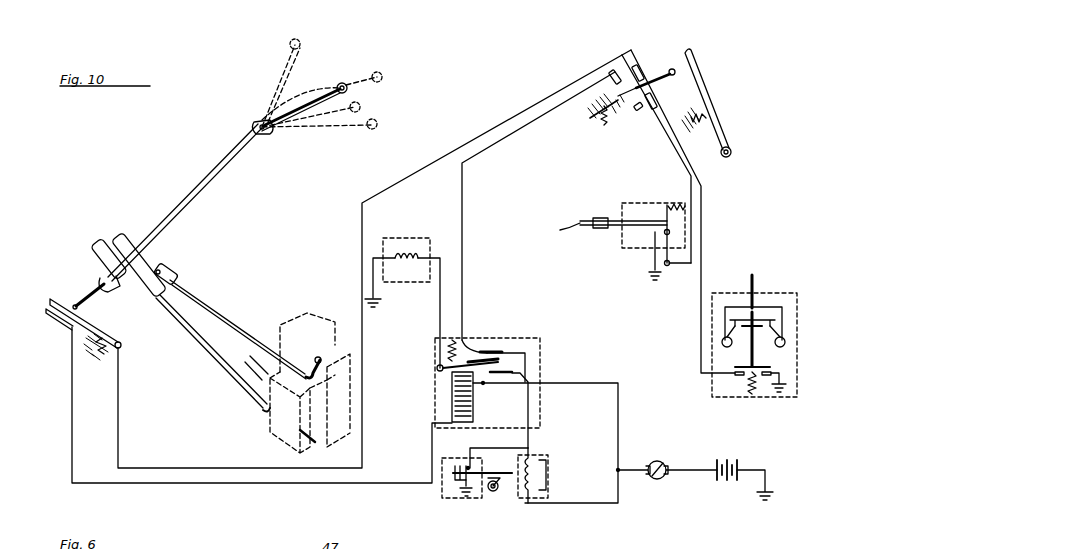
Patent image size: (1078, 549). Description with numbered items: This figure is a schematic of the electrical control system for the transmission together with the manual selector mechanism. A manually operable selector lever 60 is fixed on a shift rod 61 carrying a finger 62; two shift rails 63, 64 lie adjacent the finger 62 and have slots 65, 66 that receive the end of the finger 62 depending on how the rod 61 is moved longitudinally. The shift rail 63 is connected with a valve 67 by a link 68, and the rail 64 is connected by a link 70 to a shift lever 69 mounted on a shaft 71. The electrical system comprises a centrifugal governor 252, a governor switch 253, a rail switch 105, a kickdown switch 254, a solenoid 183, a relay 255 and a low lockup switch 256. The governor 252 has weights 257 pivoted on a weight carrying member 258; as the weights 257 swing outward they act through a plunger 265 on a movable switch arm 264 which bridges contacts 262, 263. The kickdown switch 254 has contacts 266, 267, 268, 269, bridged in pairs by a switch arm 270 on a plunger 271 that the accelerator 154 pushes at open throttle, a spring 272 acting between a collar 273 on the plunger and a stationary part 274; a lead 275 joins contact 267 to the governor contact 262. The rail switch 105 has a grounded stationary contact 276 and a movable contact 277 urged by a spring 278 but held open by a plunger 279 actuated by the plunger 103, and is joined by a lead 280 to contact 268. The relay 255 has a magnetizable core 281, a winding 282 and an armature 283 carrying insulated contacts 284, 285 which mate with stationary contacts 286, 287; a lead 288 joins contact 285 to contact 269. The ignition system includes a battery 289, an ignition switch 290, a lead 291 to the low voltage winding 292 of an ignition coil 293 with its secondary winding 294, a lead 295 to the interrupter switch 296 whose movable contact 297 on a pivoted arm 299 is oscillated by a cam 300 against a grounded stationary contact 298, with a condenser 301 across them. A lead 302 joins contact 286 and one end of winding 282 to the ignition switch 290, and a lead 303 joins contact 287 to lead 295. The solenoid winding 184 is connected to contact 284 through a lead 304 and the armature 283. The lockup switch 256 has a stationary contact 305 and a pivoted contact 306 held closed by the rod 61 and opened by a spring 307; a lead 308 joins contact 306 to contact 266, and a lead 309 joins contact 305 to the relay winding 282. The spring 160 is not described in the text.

The selector lever 60 is at (285, 126).
The shift rod 61 is at (210, 172).
The finger 62 is at (118, 288).
The shift rail 63 is at (101, 246).
The shift rail 64 is at (125, 236).
The slot 65 is at (134, 292).
The slot 66 is at (172, 270).
The valve 67 is at (270, 415).
The link 68 is at (213, 353).
The shift lever 69 is at (317, 356).
The link 70 is at (236, 328).
The shaft 71 is at (333, 345).
The plunger 103 is at (568, 236).
The rail switch 105 is at (614, 216).
The accelerator 154 is at (698, 70).
The spring 160 is at (711, 123).
The solenoid 183 is at (376, 243).
The solenoid winding 184 is at (405, 266).
The centrifugal governor 252 is at (763, 285).
The governor switch 253 is at (727, 382).
The kickdown switch 254 is at (641, 46).
The relay 255 is at (524, 333).
The low lockup switch 256 is at (70, 335).
The weights 257 is at (722, 341).
The weight carrying member 258 is at (745, 305).
The contact 262 is at (740, 378).
The contact 263 is at (770, 378).
The movable switch arm 264 is at (734, 368).
The plunger 265 is at (750, 357).
The contact 266 is at (634, 66).
The contact 267 is at (656, 101).
The contact 268 is at (638, 112).
The contact 269 is at (617, 92).
The switch arm 270 is at (620, 60).
The plunger 271 is at (670, 68).
The spring 272 is at (612, 128).
The collar 273 is at (616, 128).
The stationary part 274 is at (604, 122).
The lead 275 is at (703, 202).
The stationary contact 276 is at (652, 264).
The movable contact 277 is at (674, 266).
The spring 278 is at (686, 210).
The plunger 279 is at (606, 230).
The lead 280 is at (660, 140).
The magnetizable core 281 is at (432, 423).
The winding 282 is at (450, 398).
The armature 283 is at (438, 372).
The contact 284 is at (500, 362).
The contact 285 is at (450, 343).
The stationary contact 286 is at (514, 375).
The stationary contact 287 is at (503, 352).
The lead 288 is at (463, 250).
The battery 289 is at (726, 483).
The ignition switch 290 is at (657, 461).
The lead 291 is at (604, 504).
The low voltage winding 292 is at (528, 500).
The ignition coil 293 is at (539, 452).
The secondary high voltage winding 294 is at (547, 486).
The lead 295 is at (470, 460).
The interrupter switch 296 is at (460, 498).
The movable contact 297 is at (466, 466).
The stationary contact 298 is at (488, 492).
The arm 299 is at (480, 472).
The cam 300 is at (497, 491).
The condenser 301 is at (455, 479).
The lead 302 is at (619, 413).
The lead 303 is at (529, 402).
The lead 304 is at (438, 331).
The stationary contact 305 is at (50, 314).
The pivotally mounted contact 306 is at (52, 302).
The spring 307 is at (100, 360).
The lead 308 is at (119, 424).
The lead 309 is at (268, 483).